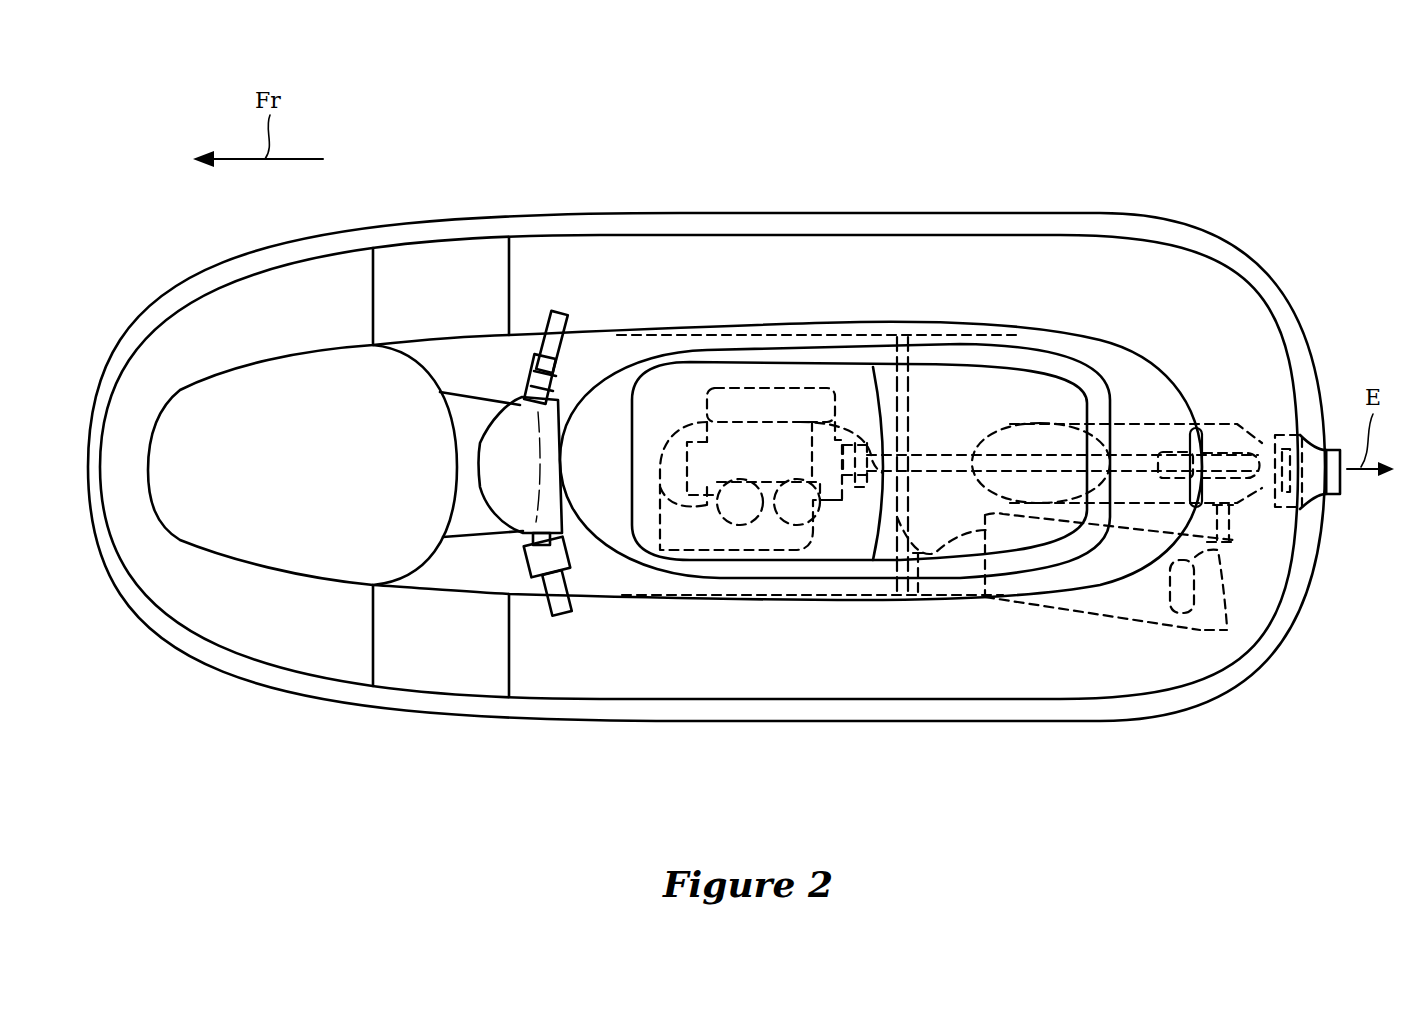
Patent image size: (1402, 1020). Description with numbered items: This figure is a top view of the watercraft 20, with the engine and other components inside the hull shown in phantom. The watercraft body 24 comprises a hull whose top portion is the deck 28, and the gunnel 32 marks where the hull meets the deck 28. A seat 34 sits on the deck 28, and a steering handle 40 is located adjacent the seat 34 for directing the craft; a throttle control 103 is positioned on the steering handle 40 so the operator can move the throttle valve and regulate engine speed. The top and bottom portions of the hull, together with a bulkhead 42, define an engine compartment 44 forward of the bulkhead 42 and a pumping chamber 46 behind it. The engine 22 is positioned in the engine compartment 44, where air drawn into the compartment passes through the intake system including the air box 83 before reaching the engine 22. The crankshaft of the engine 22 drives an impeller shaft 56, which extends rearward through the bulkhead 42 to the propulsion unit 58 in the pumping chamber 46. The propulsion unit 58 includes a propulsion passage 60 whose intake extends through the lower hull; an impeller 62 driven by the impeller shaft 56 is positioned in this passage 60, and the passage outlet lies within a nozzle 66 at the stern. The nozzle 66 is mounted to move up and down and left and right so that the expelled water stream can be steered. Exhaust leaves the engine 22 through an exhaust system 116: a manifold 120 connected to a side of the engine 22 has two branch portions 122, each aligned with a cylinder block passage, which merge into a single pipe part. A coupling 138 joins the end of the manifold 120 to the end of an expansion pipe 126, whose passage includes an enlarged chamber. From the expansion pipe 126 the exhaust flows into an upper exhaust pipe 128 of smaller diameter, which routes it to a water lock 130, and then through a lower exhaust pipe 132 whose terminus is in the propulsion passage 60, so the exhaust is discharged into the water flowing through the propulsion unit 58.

The watercraft 20 is at (1150, 165).
The watercraft body 24 is at (1257, 207).
The deck 28 is at (670, 262).
The gunnel 32 is at (592, 212).
The engine 22 is at (656, 413).
The seat 34 is at (837, 507).
The steering handle 40 is at (500, 507).
The bulkhead 42 is at (913, 397).
The engine compartment 44 is at (805, 337).
The pumping chamber 46 is at (990, 390).
The impeller shaft 56 is at (1033, 470).
The propulsion unit 58 is at (1130, 415).
The propulsion passage 60 is at (1147, 450).
The impeller 62 is at (1190, 487).
The nozzle 66 is at (1326, 482).
The air box 83 is at (752, 388).
The throttle control 103 is at (553, 310).
The exhaust system 116 is at (749, 558).
The manifold 120 is at (783, 517).
The branch portion 122 is at (722, 522).
The expansion pipe 126 is at (805, 415).
The upper exhaust pipe 128 is at (873, 545).
The water lock 130 is at (1097, 617).
The lower exhaust pipe 132 is at (1193, 583).
The coupling 138 is at (655, 557).